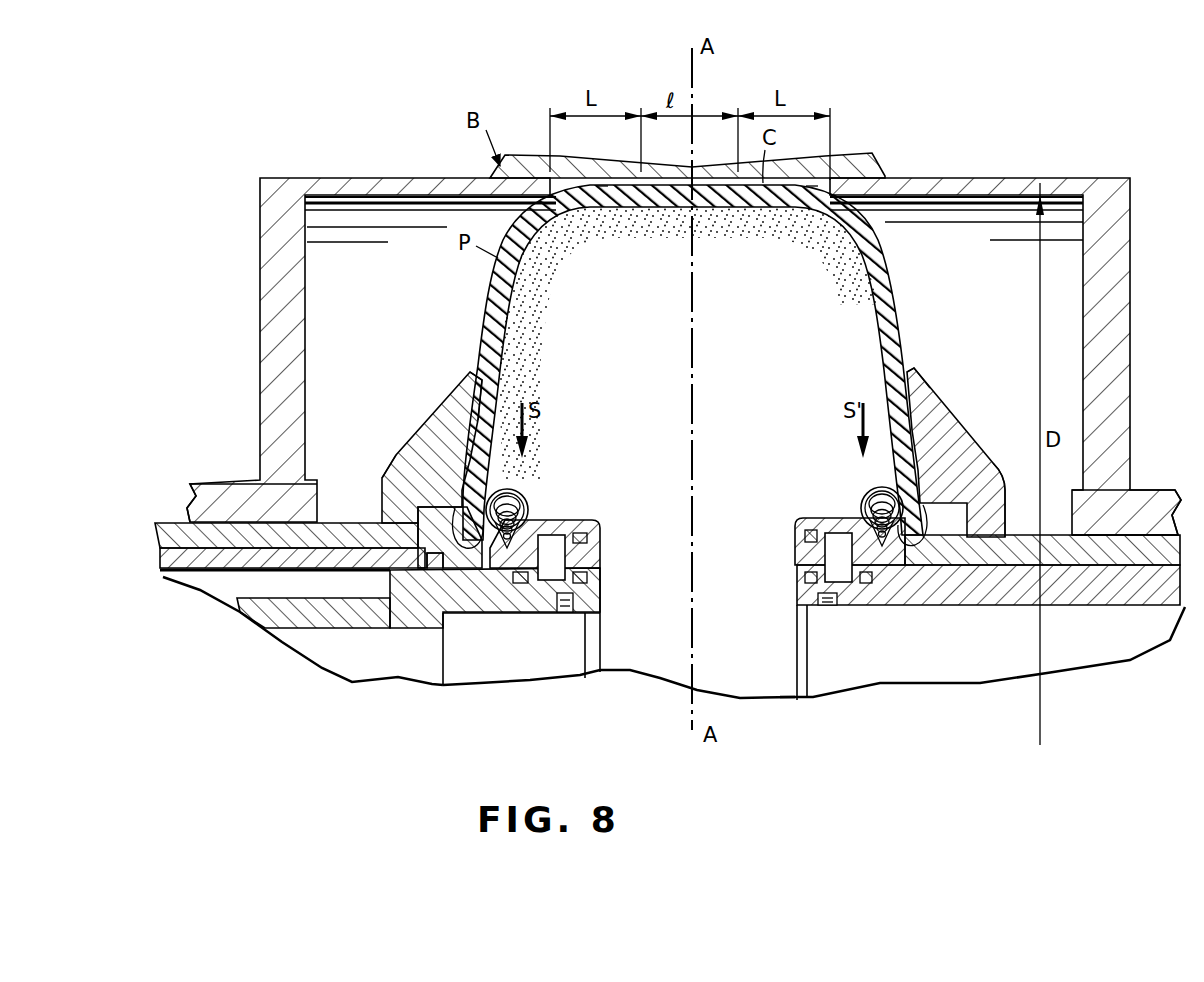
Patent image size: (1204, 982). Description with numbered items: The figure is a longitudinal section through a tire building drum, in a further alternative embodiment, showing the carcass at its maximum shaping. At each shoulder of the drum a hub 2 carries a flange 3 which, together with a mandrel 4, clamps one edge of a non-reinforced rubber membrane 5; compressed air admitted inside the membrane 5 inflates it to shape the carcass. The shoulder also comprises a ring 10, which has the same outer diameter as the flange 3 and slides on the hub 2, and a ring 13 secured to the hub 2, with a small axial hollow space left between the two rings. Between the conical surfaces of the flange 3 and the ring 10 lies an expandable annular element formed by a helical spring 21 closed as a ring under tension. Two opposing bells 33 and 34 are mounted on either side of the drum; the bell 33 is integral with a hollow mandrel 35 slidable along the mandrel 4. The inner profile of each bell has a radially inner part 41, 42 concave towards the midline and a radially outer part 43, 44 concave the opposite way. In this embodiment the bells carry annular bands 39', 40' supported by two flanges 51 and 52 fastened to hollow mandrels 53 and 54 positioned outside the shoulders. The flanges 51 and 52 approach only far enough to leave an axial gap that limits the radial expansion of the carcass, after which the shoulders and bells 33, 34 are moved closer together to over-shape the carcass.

The hub 2 is at (413, 598).
The flange 3 is at (490, 520).
The mandrel 4 is at (430, 528).
The non-reinforced rubber membrane 5 is at (872, 292).
The ring 10 is at (568, 573).
The ring 13 is at (587, 555).
The helical spring 21 is at (517, 498).
The bell 33 is at (425, 440).
The bell 34 is at (947, 435).
The hollow mandrel 35 is at (157, 537).
The annular band 39' is at (617, 227).
The annular band 40' is at (792, 227).
The radially inner part of bell inner profile 41 is at (443, 475).
The radially inner part of bell inner profile 42 is at (930, 460).
The radially outer part of bell inner profile 43 is at (470, 420).
The radially outer part of bell inner profile 44 is at (907, 392).
The flange 51 is at (268, 306).
The flange 52 is at (1115, 330).
The hollow mandrel 53 is at (225, 482).
The hollow mandrel 54 is at (1152, 512).